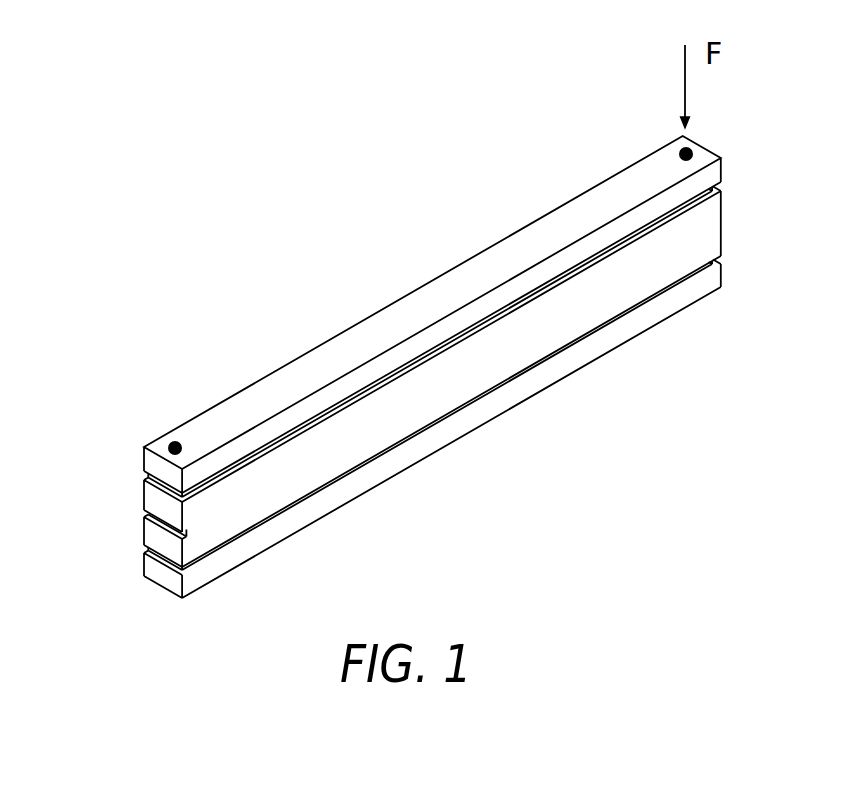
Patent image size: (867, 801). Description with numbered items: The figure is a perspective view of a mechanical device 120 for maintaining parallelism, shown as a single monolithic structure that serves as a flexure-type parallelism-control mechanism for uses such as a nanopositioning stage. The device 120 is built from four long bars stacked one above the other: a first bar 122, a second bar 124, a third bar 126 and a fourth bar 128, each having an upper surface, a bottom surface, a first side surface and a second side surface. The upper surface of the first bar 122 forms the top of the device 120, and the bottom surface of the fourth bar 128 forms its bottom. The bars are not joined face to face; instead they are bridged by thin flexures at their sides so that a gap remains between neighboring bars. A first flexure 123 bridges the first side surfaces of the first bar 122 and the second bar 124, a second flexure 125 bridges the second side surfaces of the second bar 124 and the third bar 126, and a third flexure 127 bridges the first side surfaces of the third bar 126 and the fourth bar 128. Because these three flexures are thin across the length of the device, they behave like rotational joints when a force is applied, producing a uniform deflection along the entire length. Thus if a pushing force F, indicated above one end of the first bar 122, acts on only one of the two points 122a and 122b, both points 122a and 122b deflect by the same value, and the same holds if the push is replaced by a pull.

The mechanical device 120 is at (168, 232).
The first bar 122 is at (152, 465).
The first point 122a is at (683, 148).
The second point 122b is at (173, 442).
The first flexure 123 is at (148, 478).
The second bar 124 is at (150, 492).
The second flexure 125 is at (181, 533).
The third bar 126 is at (150, 528).
The third flexure 127 is at (147, 551).
The fourth bar 128 is at (158, 576).